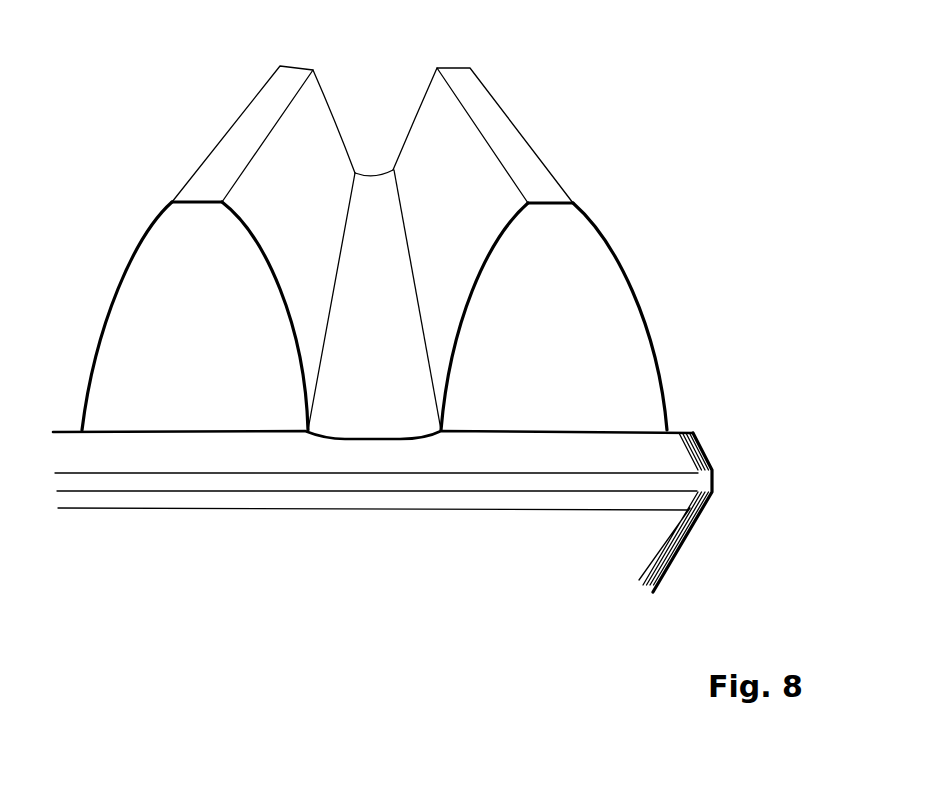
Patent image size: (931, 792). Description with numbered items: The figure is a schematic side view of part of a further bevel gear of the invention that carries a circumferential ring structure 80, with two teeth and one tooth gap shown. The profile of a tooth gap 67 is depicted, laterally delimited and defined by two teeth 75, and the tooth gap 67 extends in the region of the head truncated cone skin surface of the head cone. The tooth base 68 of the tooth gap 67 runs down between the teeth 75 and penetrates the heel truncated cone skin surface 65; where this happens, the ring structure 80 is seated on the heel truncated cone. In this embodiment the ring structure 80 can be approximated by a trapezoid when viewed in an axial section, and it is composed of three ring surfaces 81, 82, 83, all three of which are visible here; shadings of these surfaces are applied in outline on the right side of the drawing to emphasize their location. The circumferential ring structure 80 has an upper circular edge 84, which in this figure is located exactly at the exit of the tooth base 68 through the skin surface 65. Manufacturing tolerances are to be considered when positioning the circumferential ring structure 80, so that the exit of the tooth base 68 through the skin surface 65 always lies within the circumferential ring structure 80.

The skin surface 65 is at (588, 543).
The tooth gap 67 is at (395, 108).
The tooth base 68 is at (393, 365).
The teeth 75 is at (237, 157).
The circumferential ring structure 80 is at (419, 470).
The ring surface 81 is at (640, 450).
The ring surface 82 is at (612, 505).
The ring surface 83 is at (555, 487).
The upper circular edge 84 is at (602, 432).